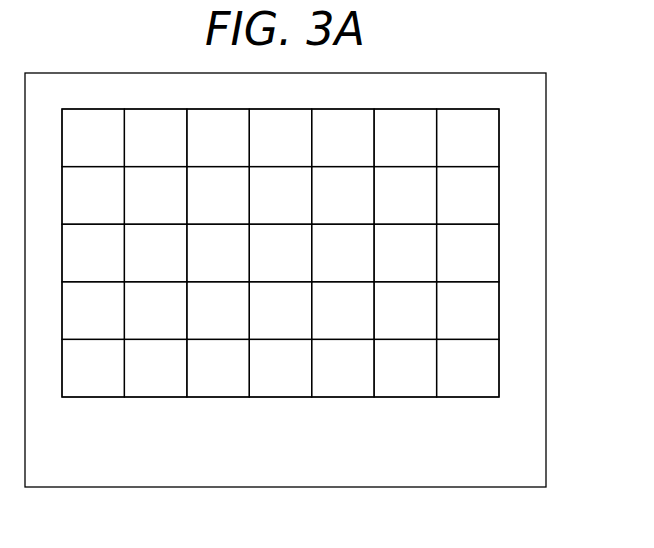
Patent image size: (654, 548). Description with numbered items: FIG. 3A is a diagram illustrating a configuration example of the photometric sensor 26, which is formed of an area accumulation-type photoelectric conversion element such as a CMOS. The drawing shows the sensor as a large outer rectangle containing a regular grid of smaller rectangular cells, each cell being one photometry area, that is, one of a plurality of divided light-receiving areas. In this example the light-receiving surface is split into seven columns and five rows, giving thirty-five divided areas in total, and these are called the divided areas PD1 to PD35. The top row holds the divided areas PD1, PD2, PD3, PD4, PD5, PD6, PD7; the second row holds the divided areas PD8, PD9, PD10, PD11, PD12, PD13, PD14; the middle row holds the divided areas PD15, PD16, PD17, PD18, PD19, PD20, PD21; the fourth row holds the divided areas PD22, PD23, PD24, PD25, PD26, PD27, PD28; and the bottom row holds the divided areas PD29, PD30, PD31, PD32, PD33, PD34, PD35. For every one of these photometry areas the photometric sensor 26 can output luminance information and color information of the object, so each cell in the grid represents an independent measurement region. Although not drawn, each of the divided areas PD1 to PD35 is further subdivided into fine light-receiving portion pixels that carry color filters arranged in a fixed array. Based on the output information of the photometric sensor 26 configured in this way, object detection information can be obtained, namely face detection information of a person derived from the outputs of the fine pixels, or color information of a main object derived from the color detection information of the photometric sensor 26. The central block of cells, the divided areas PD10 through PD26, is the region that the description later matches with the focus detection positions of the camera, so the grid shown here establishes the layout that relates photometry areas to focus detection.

The photometric sensor 26 is at (344, 253).
The divided area PD1 is at (93, 138).
The divided area PD2 is at (155, 138).
The divided area PD3 is at (218, 138).
The divided area PD4 is at (280, 138).
The divided area PD5 is at (343, 138).
The divided area PD6 is at (405, 138).
The divided area PD7 is at (468, 138).
The divided area PD8 is at (93, 196).
The divided area PD9 is at (155, 196).
The divided area PD10 is at (218, 196).
The divided area PD11 is at (280, 196).
The divided area PD12 is at (343, 196).
The divided area PD13 is at (405, 196).
The divided area PD14 is at (468, 196).
The divided area PD15 is at (93, 253).
The divided area PD16 is at (155, 253).
The divided area PD17 is at (218, 253).
The divided area PD18 is at (280, 253).
The divided area PD19 is at (343, 253).
The divided area PD20 is at (405, 253).
The divided area PD21 is at (468, 253).
The divided area PD22 is at (93, 311).
The divided area PD23 is at (155, 311).
The divided area PD24 is at (218, 311).
The divided area PD25 is at (280, 311).
The divided area PD26 is at (343, 311).
The divided area PD27 is at (405, 311).
The divided area PD28 is at (468, 311).
The divided area PD29 is at (93, 368).
The divided area PD30 is at (155, 368).
The divided area PD31 is at (218, 368).
The divided area PD32 is at (280, 368).
The divided area PD33 is at (343, 368).
The divided area PD34 is at (405, 368).
The divided area PD35 is at (468, 368).